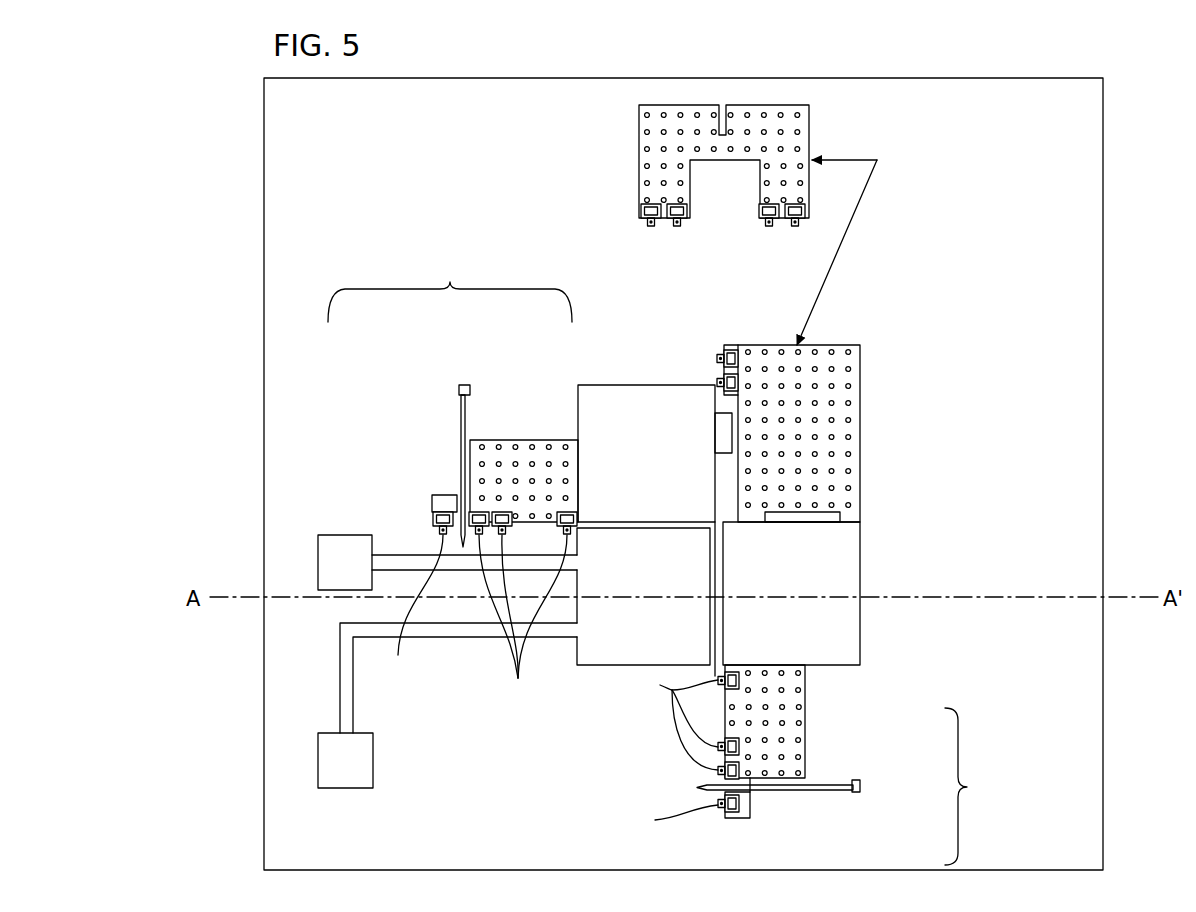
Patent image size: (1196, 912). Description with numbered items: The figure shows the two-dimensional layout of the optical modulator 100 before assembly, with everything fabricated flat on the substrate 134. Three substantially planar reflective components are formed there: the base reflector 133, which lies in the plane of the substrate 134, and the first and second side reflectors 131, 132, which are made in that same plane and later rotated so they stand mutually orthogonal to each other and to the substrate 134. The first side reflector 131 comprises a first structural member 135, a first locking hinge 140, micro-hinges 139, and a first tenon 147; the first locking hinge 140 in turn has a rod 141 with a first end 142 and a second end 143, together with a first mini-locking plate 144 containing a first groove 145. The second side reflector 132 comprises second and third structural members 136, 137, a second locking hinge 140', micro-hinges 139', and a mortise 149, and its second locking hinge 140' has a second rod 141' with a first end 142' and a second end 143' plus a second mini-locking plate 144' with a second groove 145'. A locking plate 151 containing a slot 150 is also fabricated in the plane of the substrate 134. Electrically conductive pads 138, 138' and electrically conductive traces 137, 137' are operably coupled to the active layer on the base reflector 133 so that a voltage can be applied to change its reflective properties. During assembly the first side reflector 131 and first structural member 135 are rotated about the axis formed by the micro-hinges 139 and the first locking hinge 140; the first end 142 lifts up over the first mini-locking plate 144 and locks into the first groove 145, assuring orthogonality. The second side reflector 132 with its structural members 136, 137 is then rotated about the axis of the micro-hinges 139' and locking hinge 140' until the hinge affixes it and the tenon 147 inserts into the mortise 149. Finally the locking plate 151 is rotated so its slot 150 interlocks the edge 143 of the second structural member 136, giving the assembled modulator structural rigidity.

The optical modulator 100 is at (217, 145).
The first side reflector 131 is at (652, 385).
The second side reflector 132 is at (862, 553).
The base reflector 133 is at (587, 665).
The substrate 134 is at (900, 78).
The first structural member 135 is at (556, 440).
The second structural member 136 is at (858, 376).
The third structural member / electrically conductive trace 137 is at (633, 638).
The electrically conductive trace 137' is at (458, 678).
The electrically conductive pad 138 is at (345, 534).
The electrically conductive pad 138' is at (392, 760).
The micro-hinges 139 is at (475, 620).
The micro-hinges 139' is at (665, 755).
The first locking hinge 140 is at (450, 289).
The second locking hinge 140' is at (983, 786).
The rod 141 is at (489, 431).
The second rod 141' is at (818, 771).
The first end 142 is at (529, 424).
The first end 142' is at (828, 724).
The second end 143 is at (656, 338).
The second end 143' is at (895, 791).
The first mini-locking plate 144 is at (399, 424).
The second mini-locking plate 144' is at (828, 817).
The first groove 145 is at (438, 424).
The second groove 145' is at (828, 795).
The first tenon 147 is at (715, 433).
The mortise 149 is at (845, 517).
The slot 150 is at (719, 130).
The locking plate 151 is at (790, 115).